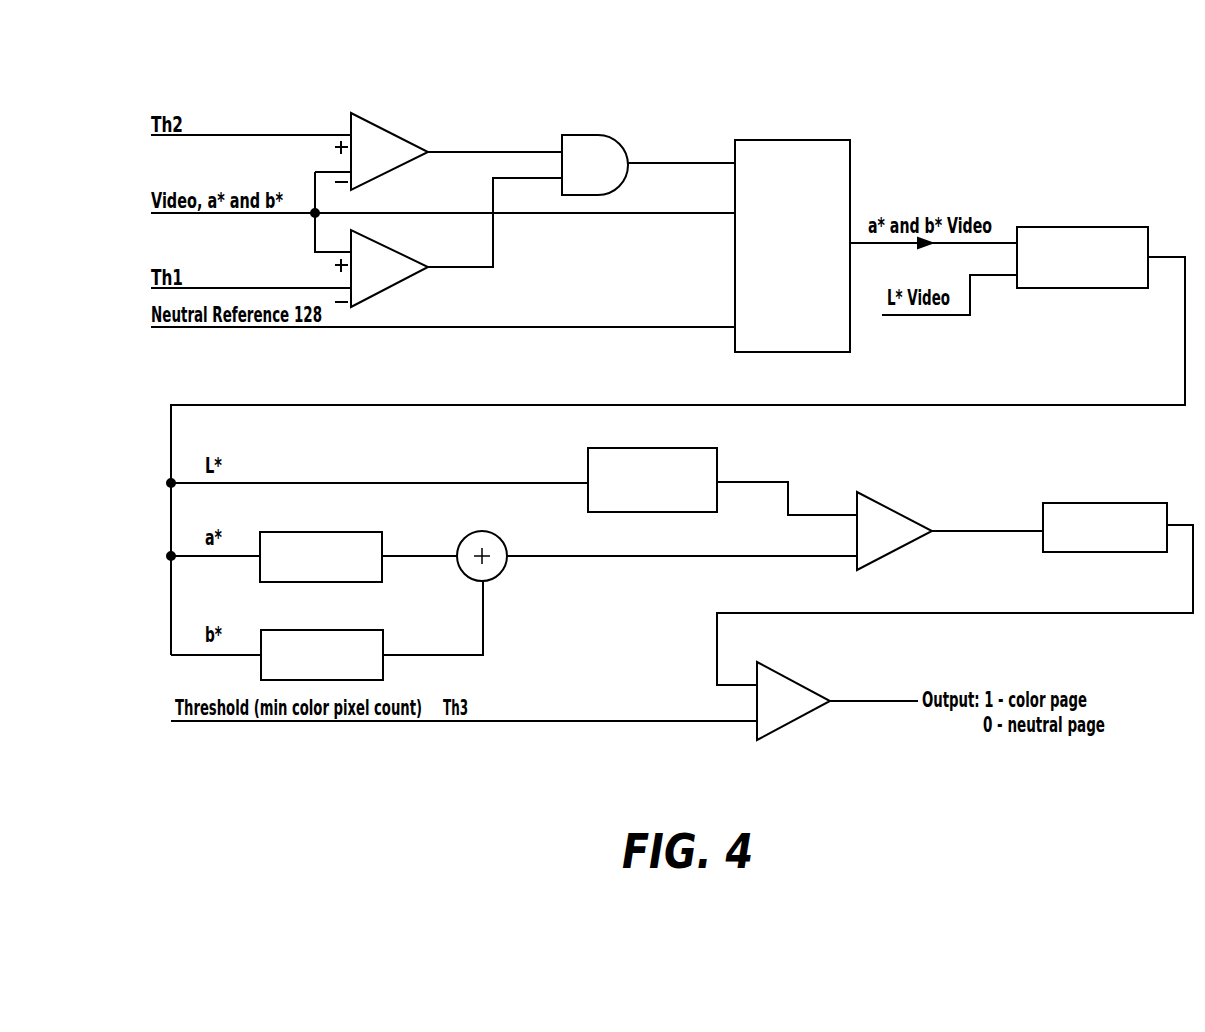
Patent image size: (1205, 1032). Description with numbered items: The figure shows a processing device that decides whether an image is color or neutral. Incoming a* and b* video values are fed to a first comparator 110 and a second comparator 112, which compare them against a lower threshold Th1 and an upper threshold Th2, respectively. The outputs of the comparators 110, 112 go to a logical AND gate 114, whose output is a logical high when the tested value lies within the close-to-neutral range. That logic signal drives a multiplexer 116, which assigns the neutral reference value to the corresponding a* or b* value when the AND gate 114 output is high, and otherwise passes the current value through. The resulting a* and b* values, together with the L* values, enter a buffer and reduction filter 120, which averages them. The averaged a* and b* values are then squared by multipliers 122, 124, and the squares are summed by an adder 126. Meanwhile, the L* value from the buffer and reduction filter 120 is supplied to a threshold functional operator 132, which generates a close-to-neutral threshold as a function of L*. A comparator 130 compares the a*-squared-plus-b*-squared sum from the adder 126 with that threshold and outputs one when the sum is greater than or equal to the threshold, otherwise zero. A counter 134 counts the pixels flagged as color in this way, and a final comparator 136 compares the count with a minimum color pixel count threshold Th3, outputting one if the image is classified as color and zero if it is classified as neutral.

The first comparator 110 is at (397, 288).
The second comparator 112 is at (385, 127).
The logical AND gate 114 is at (590, 133).
The multiplexer 116 is at (775, 140).
The buffer and reduction filter 120 is at (1087, 227).
The multiplier 122 is at (355, 532).
The multiplier 124 is at (352, 630).
The adder 126 is at (493, 577).
The comparator 130 is at (888, 505).
The threshold functional operator 132 is at (602, 448).
The counter 134 is at (1088, 503).
The comparator 136 is at (777, 672).